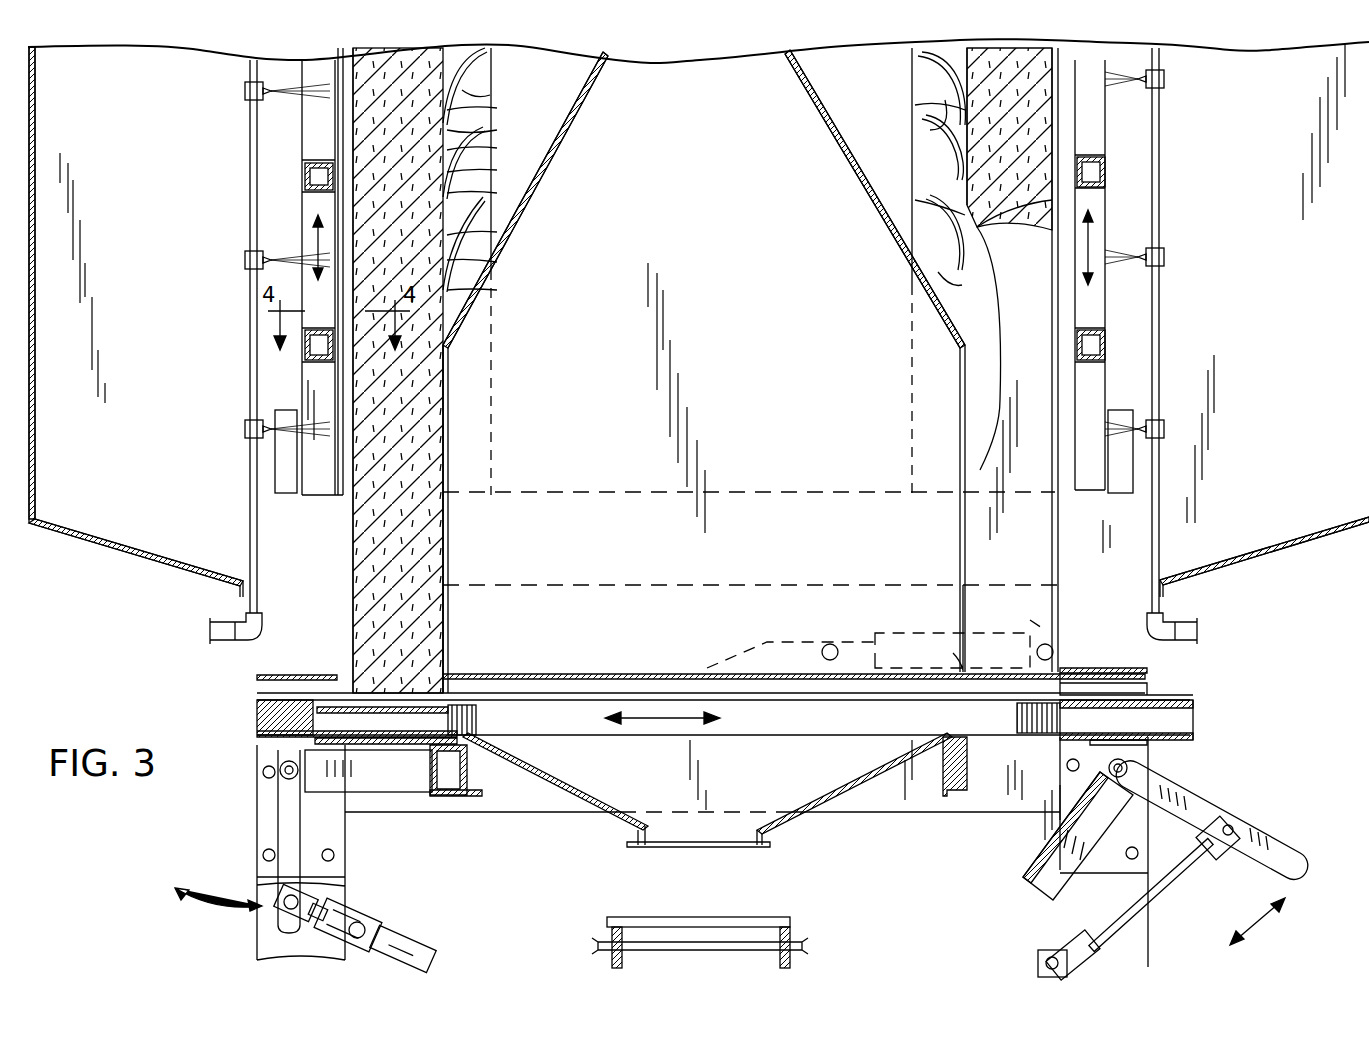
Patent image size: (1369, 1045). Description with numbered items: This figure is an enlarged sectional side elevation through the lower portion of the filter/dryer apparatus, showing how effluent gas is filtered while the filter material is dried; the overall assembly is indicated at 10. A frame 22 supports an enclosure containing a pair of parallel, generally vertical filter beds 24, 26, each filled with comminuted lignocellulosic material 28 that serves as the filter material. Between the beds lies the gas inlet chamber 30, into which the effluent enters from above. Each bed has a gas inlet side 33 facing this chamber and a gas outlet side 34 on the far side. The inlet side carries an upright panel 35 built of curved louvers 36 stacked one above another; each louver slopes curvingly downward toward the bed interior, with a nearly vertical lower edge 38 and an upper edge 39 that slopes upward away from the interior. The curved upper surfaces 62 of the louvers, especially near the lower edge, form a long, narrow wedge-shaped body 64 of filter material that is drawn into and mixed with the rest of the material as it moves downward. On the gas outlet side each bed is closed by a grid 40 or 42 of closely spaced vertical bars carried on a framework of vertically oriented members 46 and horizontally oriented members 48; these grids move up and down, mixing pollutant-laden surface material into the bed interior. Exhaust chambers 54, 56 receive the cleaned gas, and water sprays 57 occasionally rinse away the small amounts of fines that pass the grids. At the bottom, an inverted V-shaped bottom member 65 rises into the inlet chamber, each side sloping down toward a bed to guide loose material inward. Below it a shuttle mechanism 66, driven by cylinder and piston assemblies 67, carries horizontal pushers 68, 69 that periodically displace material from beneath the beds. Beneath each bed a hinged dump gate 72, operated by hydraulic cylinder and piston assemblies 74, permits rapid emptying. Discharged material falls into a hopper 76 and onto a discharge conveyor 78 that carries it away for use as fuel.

The furnace assembly 10 is at (105, 577).
The frame 22 is at (1150, 928).
The filter bed 24 is at (1075, 134).
The filter bed 26 is at (491, 72).
The comminuted lignocellulosic material 28 is at (443, 398).
The gas inlet chamber 30 is at (553, 60).
The gas inlet side 33 is at (490, 80).
The gas outlet side 34 is at (325, 202).
The upright panel 35 is at (492, 96).
The curved louvers 36 is at (491, 110).
The lower edge 38 is at (491, 192).
The upper edge 39 is at (491, 133).
The grid 40 is at (1052, 228).
The grid 42 is at (345, 112).
The vertically oriented members 46 is at (305, 130).
The horizontally oriented members 48 is at (308, 176).
The exhaust chamber 54 is at (1286, 323).
The exhaust chamber 56 is at (148, 452).
The water sprays 57 is at (245, 90).
The curved upper surfaces 62 is at (517, 210).
The wedge-shaped body 64 is at (491, 153).
The inverted V-shaped bottom member 65 is at (555, 130).
The shuttle mechanism 66 is at (596, 697).
The cylinder and piston assemblies 67 is at (925, 635).
The horizontal pusher 68 is at (1030, 718).
The horizontal pusher 69 is at (468, 700).
The dump gate 72 is at (393, 770).
The hydraulic cylinder and piston assemblies 74 is at (408, 935).
The hopper 76 is at (555, 795).
The discharge conveyor 78 is at (670, 917).